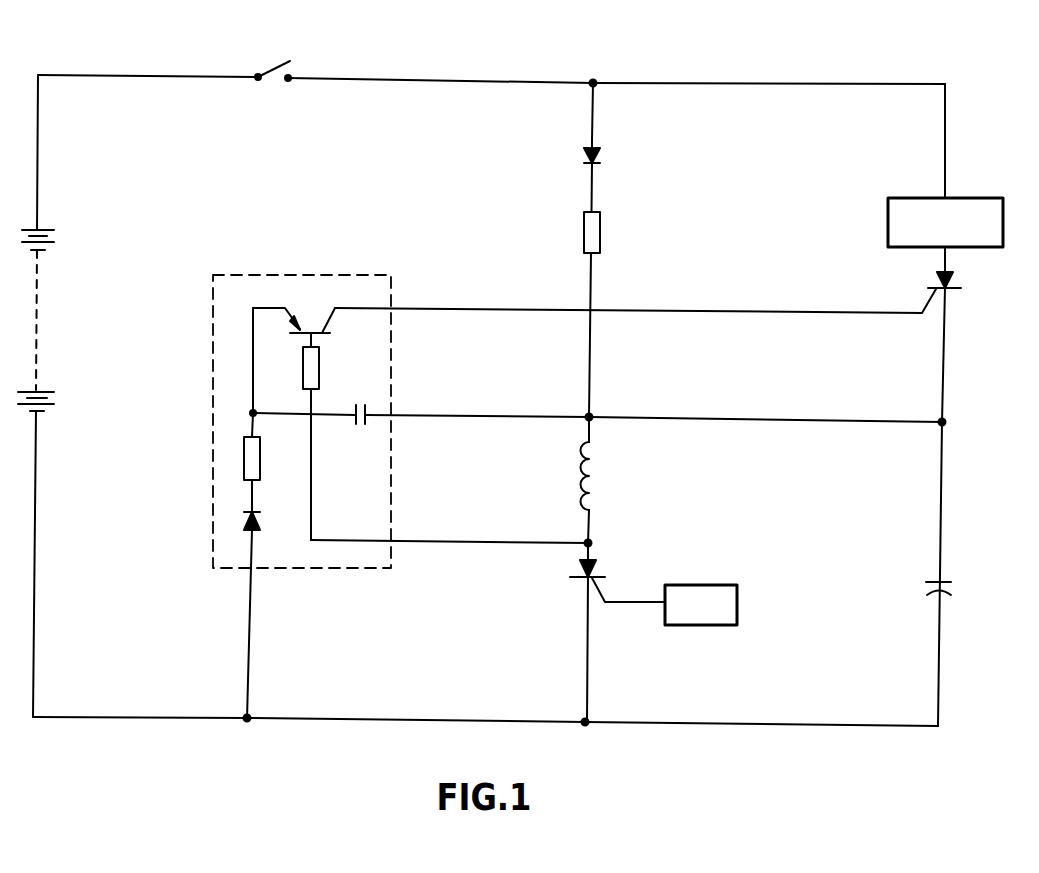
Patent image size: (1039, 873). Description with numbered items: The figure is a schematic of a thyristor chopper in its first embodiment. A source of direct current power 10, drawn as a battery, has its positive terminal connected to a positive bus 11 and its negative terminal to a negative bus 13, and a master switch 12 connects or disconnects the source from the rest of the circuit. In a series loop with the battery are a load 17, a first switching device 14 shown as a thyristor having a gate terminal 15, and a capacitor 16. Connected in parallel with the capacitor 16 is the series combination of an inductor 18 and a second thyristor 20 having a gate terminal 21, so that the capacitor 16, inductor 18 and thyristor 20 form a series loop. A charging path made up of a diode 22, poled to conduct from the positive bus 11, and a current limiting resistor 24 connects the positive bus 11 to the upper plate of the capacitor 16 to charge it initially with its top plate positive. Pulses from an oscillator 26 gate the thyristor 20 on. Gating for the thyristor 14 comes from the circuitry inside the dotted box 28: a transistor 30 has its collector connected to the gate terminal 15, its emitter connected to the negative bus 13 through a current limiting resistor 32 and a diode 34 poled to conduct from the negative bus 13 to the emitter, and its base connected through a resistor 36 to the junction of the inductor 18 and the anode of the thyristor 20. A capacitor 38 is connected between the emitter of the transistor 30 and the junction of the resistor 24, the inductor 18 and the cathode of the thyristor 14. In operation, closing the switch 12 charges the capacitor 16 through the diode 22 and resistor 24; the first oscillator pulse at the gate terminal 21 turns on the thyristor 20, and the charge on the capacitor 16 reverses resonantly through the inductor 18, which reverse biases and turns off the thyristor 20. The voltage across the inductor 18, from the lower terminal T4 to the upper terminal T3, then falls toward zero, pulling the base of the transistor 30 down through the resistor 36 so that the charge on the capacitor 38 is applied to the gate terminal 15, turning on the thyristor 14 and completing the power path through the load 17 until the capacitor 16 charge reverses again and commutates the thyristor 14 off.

The source of direct current power 10 is at (60, 244).
The positive bus 11 is at (177, 75).
The master switch 12 is at (288, 62).
The negative bus 13 is at (100, 718).
The first switching device 14 is at (955, 282).
The gate terminal 15 is at (926, 303).
The capacitor 16 is at (953, 584).
The load 17 is at (1003, 199).
The inductor 18 is at (594, 487).
The second thyristor 20 is at (581, 568).
The gate terminal 21 is at (606, 592).
The diode 22 is at (606, 156).
The current limiting resistor 24 is at (602, 229).
The oscillator 26 is at (738, 588).
The gating circuitry 28 is at (312, 273).
The transistor 30 is at (335, 322).
The current limiting resistor 32 is at (262, 452).
The diode 34 is at (260, 518).
The resistor 36 is at (320, 372).
The capacitor 38 is at (366, 420).
The upper terminal T3 is at (597, 410).
The lower terminal T4 is at (594, 541).